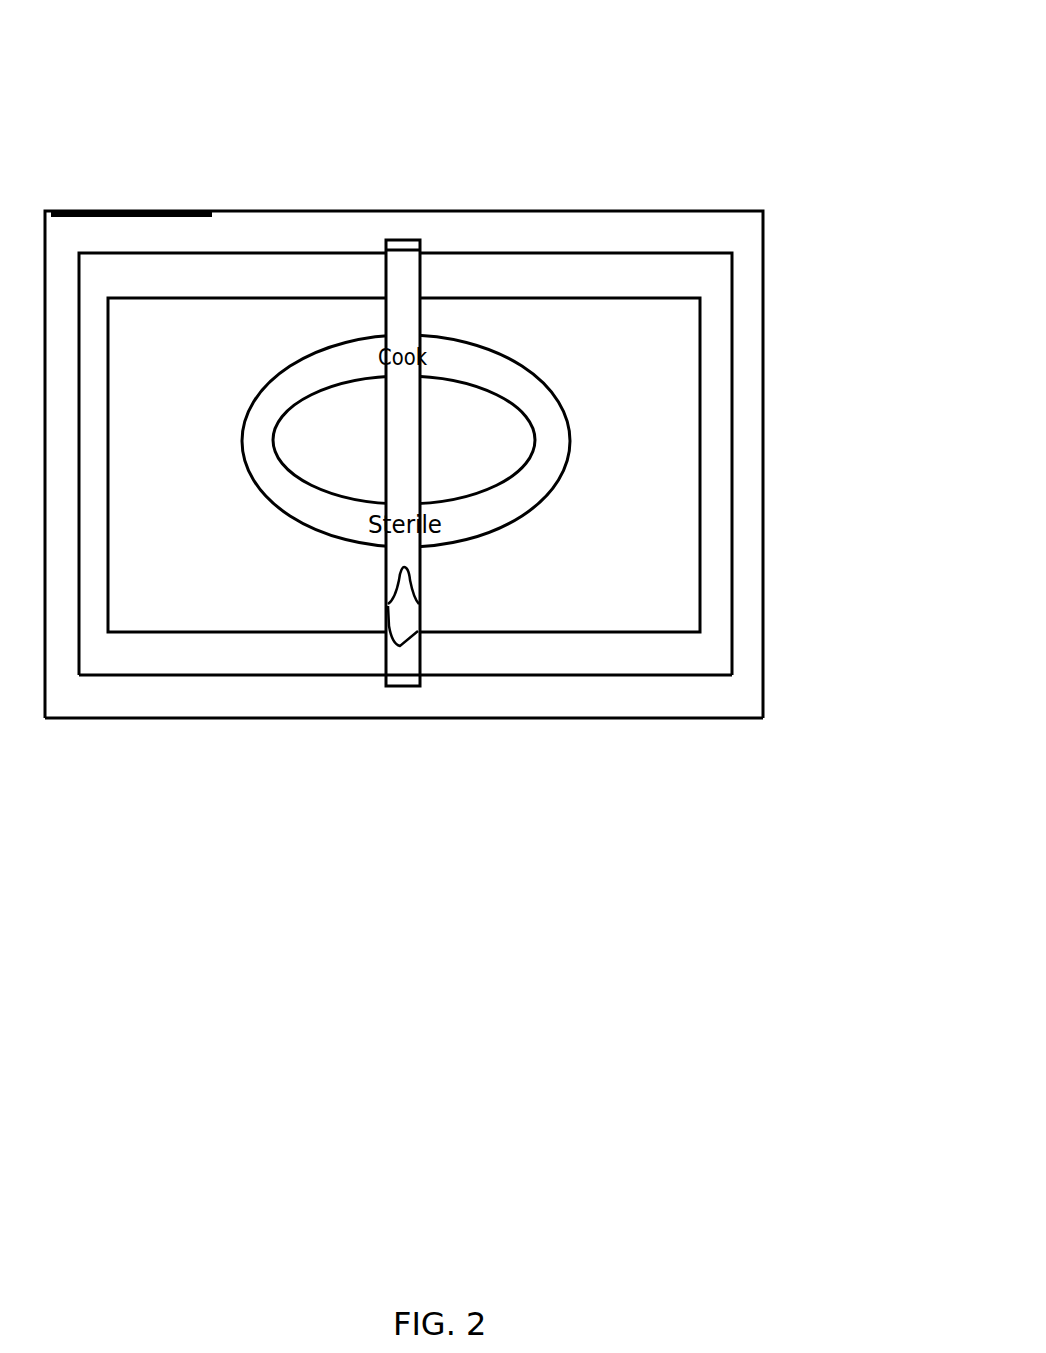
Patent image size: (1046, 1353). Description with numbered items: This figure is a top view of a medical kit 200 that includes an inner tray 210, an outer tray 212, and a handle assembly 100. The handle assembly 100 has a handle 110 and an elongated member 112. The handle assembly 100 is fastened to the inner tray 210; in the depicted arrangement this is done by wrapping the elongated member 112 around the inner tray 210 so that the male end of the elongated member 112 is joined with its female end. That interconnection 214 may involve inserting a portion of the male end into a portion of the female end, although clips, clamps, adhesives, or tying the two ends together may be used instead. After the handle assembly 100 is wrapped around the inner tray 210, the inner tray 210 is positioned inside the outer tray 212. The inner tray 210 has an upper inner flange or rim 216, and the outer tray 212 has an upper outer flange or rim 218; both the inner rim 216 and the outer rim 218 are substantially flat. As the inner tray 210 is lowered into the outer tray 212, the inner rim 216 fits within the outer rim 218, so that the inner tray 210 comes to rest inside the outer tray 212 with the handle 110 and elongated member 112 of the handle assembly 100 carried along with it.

The medical kit 200 is at (631, 86).
The handle assembly 100 is at (417, 201).
The elongated member 112 is at (420, 275).
The handle 110 is at (297, 480).
The inner tray 210 is at (565, 275).
The outer tray 212 is at (728, 233).
The interconnection 214 is at (420, 628).
The inner rim 216 is at (578, 658).
The outer rim 218 is at (705, 695).